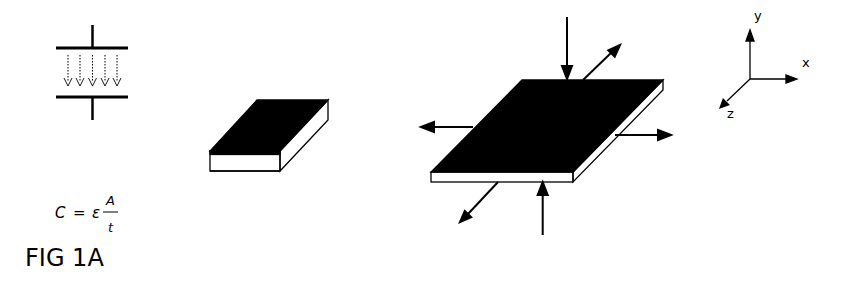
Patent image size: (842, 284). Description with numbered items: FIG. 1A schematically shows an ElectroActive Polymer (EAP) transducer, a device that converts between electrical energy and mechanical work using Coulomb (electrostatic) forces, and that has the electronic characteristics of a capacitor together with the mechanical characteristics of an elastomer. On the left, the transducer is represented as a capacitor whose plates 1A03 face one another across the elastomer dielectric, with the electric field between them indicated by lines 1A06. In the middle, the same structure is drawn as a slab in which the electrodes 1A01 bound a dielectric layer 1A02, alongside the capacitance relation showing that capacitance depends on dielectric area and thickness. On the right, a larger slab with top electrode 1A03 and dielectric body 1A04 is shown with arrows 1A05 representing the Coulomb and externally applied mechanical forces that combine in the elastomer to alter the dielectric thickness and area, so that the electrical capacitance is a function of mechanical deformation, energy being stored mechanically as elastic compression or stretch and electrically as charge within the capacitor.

The electrode plate 1A01 is at (235, 125).
The dielectric layer 1A02 is at (249, 162).
The capacitor plate / electrode 1A03 is at (81, 46).
The dielectric body 1A04 is at (456, 182).
The force / strain direction arrows 1A05 is at (457, 125).
The electric field lines 1A06 is at (124, 72).